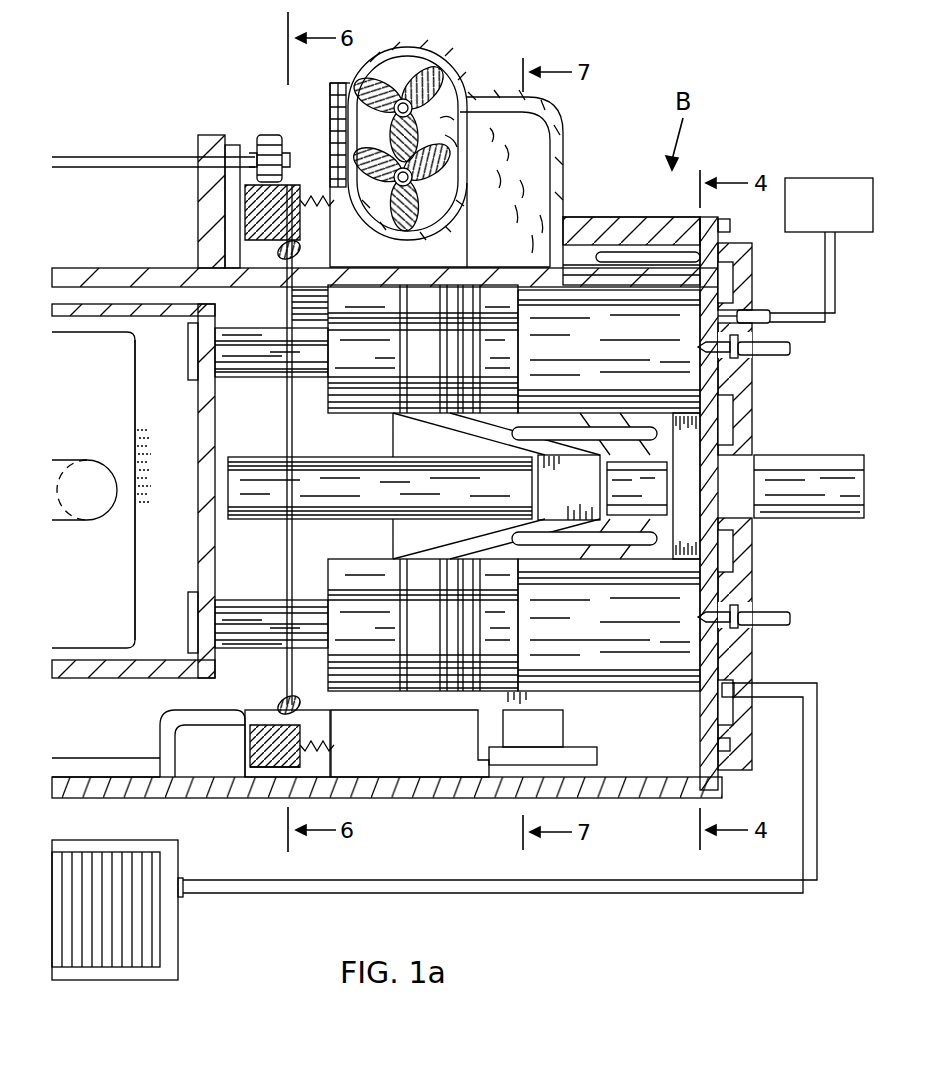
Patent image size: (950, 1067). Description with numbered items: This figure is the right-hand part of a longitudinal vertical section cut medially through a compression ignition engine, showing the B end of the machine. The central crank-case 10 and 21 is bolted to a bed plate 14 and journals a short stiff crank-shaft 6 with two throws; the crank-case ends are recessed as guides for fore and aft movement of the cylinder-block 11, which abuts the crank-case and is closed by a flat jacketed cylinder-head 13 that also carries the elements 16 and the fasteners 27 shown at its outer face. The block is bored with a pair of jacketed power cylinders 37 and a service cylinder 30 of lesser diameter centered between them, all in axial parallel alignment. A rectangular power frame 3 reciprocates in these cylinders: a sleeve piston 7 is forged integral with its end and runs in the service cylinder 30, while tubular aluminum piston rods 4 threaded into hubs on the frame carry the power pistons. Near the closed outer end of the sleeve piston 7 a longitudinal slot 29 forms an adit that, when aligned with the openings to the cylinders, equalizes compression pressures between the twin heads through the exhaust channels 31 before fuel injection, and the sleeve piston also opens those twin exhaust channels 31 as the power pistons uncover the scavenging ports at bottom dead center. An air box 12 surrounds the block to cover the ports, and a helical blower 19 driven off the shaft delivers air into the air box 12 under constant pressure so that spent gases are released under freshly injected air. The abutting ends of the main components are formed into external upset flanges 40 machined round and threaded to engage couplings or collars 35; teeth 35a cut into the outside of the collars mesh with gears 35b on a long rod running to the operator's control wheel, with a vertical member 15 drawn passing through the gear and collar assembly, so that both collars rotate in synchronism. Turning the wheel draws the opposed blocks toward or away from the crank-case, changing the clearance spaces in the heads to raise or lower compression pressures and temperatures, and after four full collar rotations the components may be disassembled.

The power frame 3 is at (130, 356).
The piston rod 4 is at (262, 377).
The crank-shaft 6 is at (104, 462).
The sleeve piston 7 is at (268, 520).
The crank-case 10 is at (122, 758).
The cylinder-block 11 is at (640, 214).
The air box 12 is at (480, 230).
The cylinder-head 13 is at (754, 562).
The bed plate 14 is at (394, 774).
The vertical rod 15 is at (284, 262).
The spark plug 16 is at (774, 352).
The blower 19 is at (454, 76).
The crank-case 21 is at (116, 265).
The bolt 27 is at (728, 235).
The slot 29 is at (590, 499).
The service cylinder 30 is at (392, 516).
The exhaust channel 31 is at (688, 477).
The collar 35 is at (305, 188).
The teeth 35a is at (210, 185).
The gear 35b is at (278, 124).
The power cylinder 37 is at (514, 384).
The flange 40 is at (322, 255).